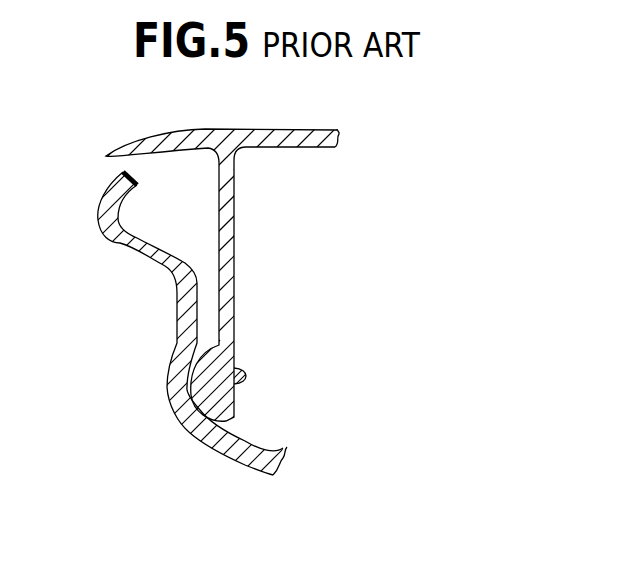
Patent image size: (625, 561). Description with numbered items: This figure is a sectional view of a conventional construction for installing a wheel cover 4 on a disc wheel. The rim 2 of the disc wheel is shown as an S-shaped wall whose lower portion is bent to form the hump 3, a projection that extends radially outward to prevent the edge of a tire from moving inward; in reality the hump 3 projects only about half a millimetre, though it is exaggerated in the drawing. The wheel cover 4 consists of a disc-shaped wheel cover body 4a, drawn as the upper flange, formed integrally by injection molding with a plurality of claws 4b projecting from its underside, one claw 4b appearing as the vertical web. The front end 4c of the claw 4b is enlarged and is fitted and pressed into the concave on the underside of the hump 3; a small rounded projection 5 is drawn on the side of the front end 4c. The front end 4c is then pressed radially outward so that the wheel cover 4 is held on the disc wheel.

The rim 2 is at (182, 306).
The hump 3 is at (172, 395).
The wheel cover 4 is at (318, 126).
The wheel cover body 4a is at (243, 130).
The claw 4b is at (218, 190).
The front end of the claw 4c is at (226, 389).
The projection 5 is at (248, 377).